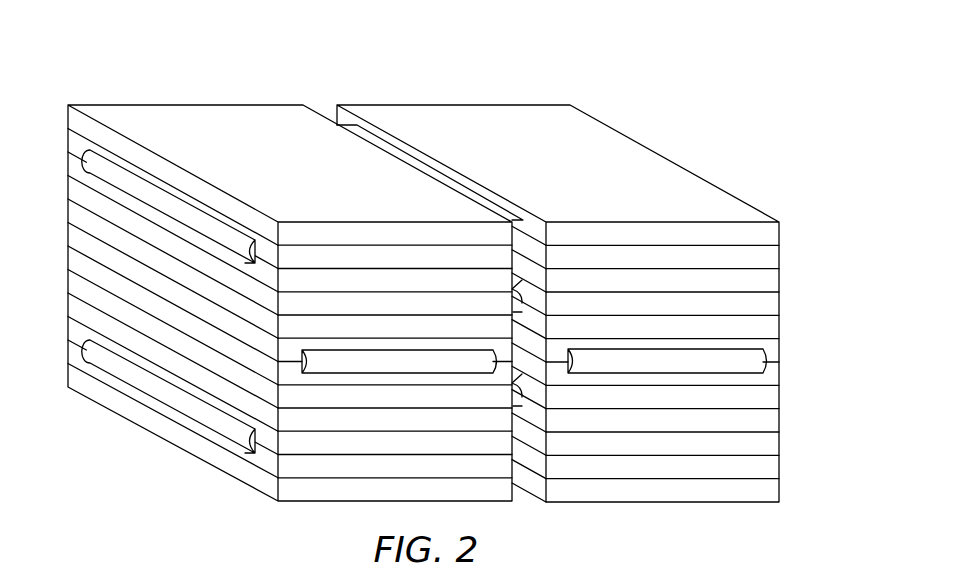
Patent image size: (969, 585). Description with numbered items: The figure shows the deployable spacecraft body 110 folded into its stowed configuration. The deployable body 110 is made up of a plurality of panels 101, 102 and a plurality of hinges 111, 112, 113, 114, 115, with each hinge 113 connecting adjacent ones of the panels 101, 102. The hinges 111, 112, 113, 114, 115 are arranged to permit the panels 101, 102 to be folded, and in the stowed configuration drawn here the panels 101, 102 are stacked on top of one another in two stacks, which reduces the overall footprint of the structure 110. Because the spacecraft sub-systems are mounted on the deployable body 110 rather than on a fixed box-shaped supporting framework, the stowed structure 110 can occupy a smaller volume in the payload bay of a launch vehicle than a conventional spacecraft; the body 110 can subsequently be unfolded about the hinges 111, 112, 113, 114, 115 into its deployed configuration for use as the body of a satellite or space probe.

The deployable spacecraft body 110 is at (450, 294).
The panel 101 is at (290, 294).
The panel 102 is at (558, 294).
The hinge 111 is at (346, 373).
The hinge 112 is at (663, 373).
The hinge 113 is at (390, 143).
The hinge 114 is at (110, 161).
The hinge 115 is at (109, 375).